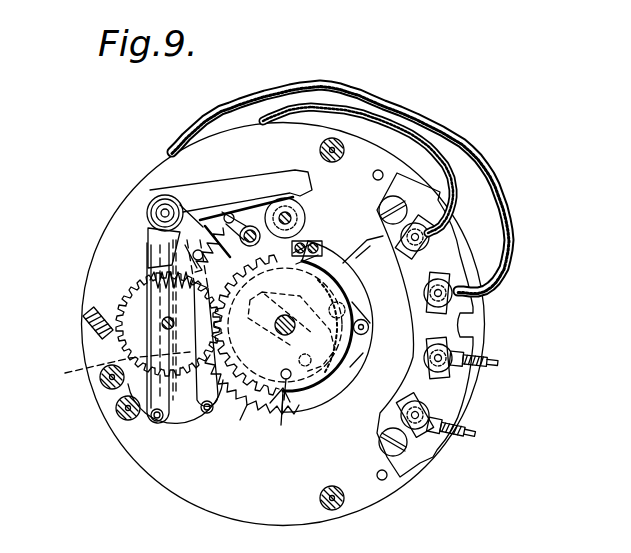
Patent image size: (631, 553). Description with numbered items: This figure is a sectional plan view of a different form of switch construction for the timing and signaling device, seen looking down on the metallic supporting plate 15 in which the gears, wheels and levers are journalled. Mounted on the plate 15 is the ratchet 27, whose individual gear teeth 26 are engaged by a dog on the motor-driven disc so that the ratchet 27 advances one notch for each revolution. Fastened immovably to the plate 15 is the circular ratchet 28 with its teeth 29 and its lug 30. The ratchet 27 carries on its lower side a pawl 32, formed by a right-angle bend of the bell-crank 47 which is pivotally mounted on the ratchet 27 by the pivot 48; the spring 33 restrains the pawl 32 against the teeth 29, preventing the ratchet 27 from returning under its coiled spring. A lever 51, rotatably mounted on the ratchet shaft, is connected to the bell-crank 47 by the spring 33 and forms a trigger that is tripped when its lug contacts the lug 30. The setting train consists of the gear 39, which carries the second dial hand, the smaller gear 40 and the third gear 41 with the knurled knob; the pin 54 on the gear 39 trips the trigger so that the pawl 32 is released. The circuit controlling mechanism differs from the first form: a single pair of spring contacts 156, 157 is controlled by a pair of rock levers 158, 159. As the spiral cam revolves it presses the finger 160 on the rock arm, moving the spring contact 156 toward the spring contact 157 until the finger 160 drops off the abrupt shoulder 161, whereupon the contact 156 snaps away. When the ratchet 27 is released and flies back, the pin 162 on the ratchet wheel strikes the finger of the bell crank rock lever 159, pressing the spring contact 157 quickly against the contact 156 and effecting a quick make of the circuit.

The supporting plate 15 is at (365, 497).
The gear teeth 26 is at (253, 404).
The ratchet 27 is at (270, 404).
The circular ratchet 28 is at (342, 272).
The teeth 29 is at (363, 358).
The lug 30 is at (279, 325).
The pawl 32 is at (345, 292).
The spring 33 is at (292, 326).
The gear 39 is at (242, 389).
The gear 40 is at (123, 293).
The gear 41 is at (88, 333).
The bell-crank 47 is at (370, 314).
The pivot 48 is at (369, 331).
The lever 51 is at (308, 410).
The pin 54 is at (287, 393).
The spring contact 156 is at (160, 428).
The spring contact 157 is at (205, 425).
The rock lever 158 is at (135, 390).
The rock lever 159 is at (108, 369).
The finger 160 is at (304, 186).
The abrupt shoulder 161 is at (303, 213).
The pin 162 is at (302, 233).